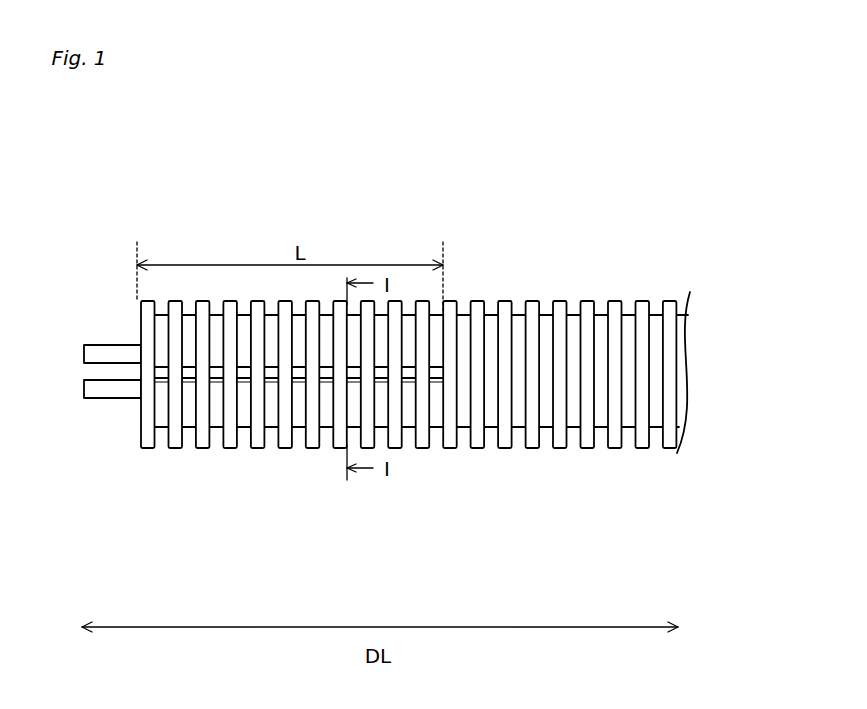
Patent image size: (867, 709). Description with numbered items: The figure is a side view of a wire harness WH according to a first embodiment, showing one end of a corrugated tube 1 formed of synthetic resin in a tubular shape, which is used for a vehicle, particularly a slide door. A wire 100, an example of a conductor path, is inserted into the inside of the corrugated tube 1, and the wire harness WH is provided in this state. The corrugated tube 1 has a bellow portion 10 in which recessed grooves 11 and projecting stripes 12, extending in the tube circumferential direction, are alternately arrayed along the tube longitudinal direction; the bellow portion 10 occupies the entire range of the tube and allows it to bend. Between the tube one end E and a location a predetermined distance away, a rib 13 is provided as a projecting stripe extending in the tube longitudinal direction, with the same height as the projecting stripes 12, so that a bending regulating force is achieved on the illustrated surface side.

The corrugated tube 1 is at (572, 273).
The bellow portion 10 is at (414, 453).
The recessed grooves 11 is at (190, 427).
The projecting stripes 12 is at (202, 448).
The rib 13 is at (242, 372).
The wire 100 is at (97, 347).
The wire harness WH is at (570, 160).
The tube one end E is at (136, 330).